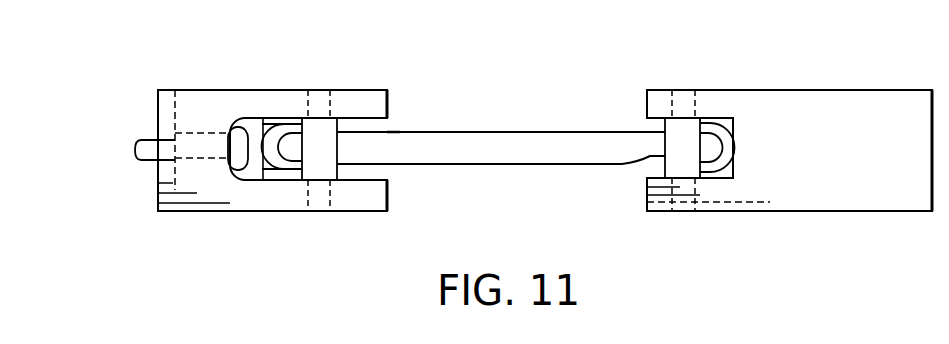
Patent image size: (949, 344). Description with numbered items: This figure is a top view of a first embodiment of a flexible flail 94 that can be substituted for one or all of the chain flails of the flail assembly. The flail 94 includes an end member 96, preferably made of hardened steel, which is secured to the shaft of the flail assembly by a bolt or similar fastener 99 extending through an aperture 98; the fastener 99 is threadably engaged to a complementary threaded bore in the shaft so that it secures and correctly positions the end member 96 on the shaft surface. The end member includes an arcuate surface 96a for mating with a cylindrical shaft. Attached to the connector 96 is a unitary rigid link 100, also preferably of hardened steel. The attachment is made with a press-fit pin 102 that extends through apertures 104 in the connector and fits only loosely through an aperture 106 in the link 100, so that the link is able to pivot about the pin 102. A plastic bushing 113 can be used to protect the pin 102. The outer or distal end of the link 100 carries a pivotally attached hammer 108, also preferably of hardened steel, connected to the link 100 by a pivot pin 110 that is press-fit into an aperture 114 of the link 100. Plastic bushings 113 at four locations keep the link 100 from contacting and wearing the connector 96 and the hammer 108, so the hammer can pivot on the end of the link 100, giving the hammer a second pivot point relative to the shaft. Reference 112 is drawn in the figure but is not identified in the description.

The flexible flail 94 is at (319, 221).
The end member 96 is at (217, 112).
The arcuate surface 96a is at (158, 184).
The aperture 98 is at (187, 112).
The fastener 99 is at (265, 118).
The link 100 is at (518, 145).
The press-fit pin 102 is at (340, 169).
The apertures 104 is at (326, 116).
The aperture 106 is at (387, 133).
The hammer 108 is at (848, 113).
The pivot pin 110 is at (665, 126).
The pivot pin 112 is at (697, 118).
The plastic bushing 113 is at (282, 178).
The aperture 114 is at (623, 167).